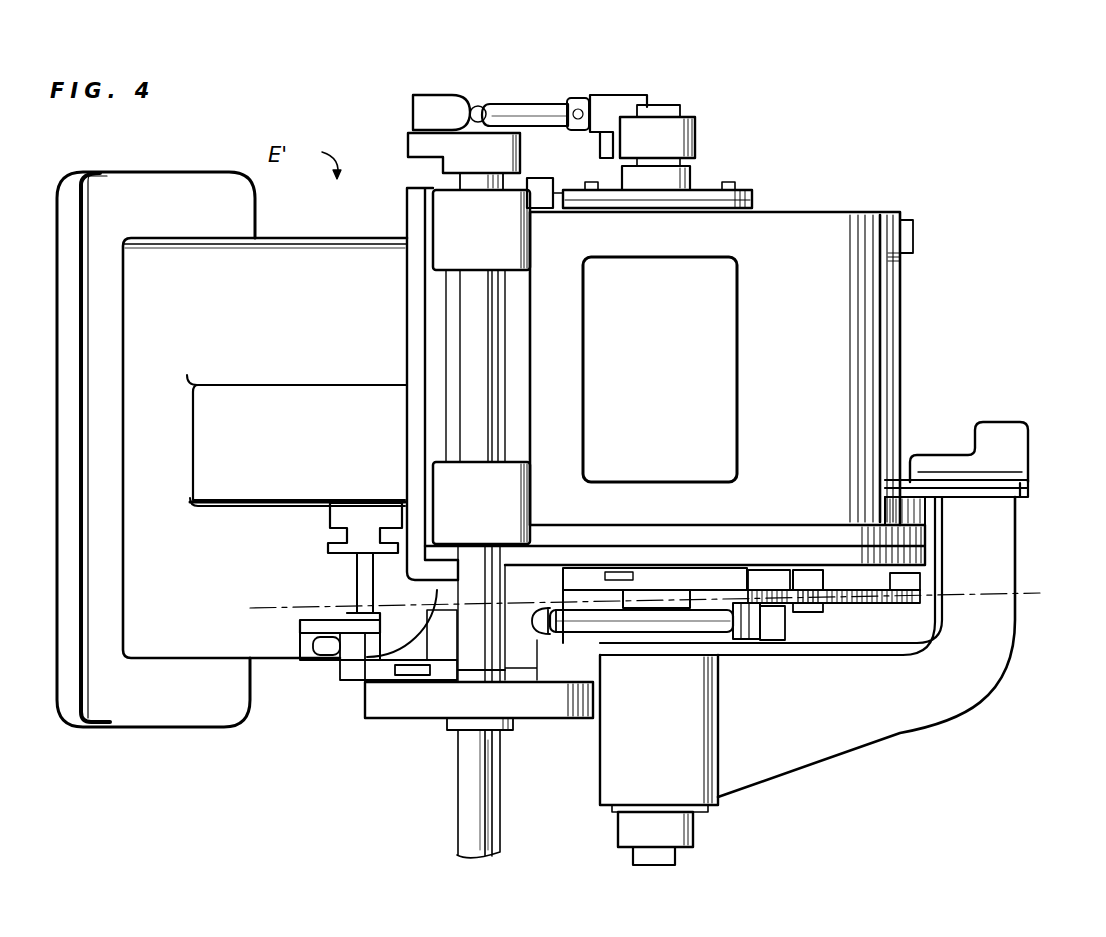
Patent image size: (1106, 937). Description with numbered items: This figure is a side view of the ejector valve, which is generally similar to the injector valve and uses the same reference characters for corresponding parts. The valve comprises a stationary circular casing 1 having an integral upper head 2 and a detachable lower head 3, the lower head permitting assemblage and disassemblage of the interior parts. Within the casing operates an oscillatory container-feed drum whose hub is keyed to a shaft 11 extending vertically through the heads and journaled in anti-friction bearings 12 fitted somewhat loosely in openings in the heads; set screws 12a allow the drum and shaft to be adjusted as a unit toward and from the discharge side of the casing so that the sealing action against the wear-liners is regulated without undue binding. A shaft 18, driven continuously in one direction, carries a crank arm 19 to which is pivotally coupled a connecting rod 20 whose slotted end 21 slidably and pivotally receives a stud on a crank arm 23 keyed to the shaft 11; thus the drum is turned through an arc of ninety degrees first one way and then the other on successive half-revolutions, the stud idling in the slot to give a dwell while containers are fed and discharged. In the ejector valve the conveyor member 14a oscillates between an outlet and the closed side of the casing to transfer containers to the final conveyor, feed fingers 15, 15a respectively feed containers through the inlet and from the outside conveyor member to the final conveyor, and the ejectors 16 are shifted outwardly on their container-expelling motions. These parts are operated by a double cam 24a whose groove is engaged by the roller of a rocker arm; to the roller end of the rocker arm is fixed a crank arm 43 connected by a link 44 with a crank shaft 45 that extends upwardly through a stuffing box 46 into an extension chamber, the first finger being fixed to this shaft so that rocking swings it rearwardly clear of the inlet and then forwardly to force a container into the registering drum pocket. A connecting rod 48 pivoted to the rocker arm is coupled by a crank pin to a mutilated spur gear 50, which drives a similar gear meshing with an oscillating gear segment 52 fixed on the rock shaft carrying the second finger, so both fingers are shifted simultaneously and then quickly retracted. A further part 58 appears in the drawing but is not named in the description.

The casing 1 is at (866, 314).
The upper head 2 is at (835, 206).
The lower head 3 is at (888, 555).
The shaft 11 is at (672, 106).
The anti-friction bearings 12 is at (715, 190).
The set screws 12a is at (577, 172).
The conveyor member 14a is at (1000, 497).
The feed finger 15 is at (962, 692).
The feed finger 15a is at (1010, 408).
The ejector 16 is at (659, 730).
The shaft 18 is at (495, 800).
The crank arm 19 is at (418, 142).
The connecting rod 20 is at (508, 110).
The slotted end 21 is at (628, 100).
The crank arm 23 is at (662, 138).
The double cam 24a is at (405, 708).
The crank arm 43 is at (337, 660).
The link 44 is at (340, 627).
The crank shaft 45 is at (357, 574).
The stuffing box 46 is at (333, 518).
The connecting rod 48 is at (670, 622).
The mutilated spur gear 50 is at (808, 604).
The gear segment 52 is at (880, 603).
The window opening 58 is at (738, 380).